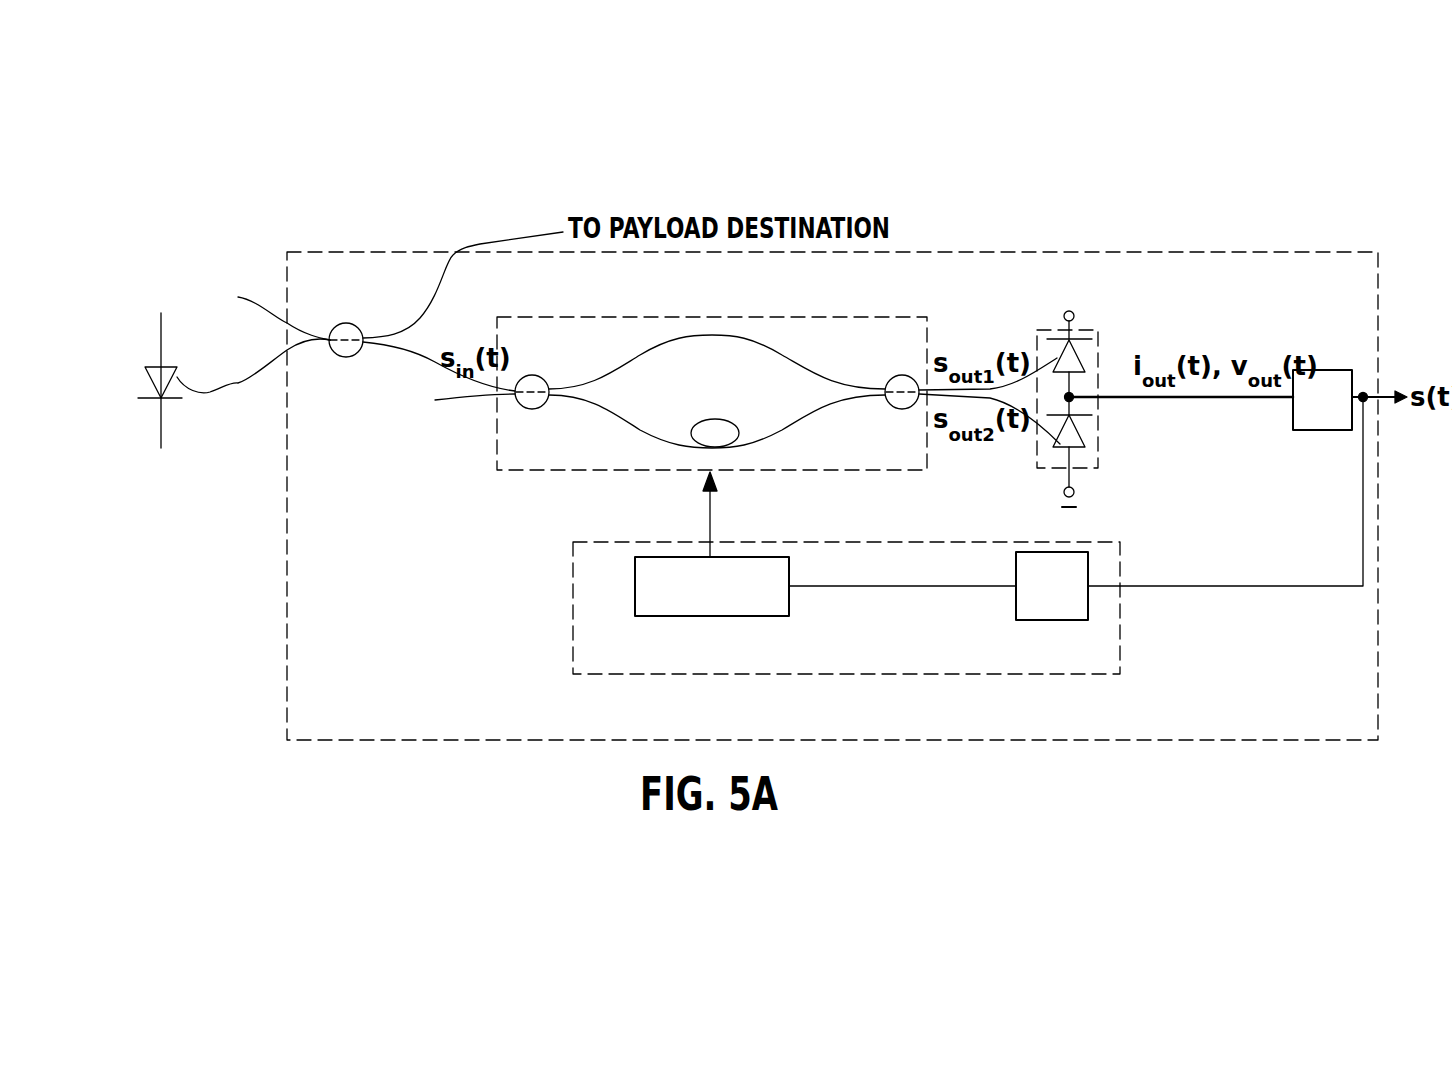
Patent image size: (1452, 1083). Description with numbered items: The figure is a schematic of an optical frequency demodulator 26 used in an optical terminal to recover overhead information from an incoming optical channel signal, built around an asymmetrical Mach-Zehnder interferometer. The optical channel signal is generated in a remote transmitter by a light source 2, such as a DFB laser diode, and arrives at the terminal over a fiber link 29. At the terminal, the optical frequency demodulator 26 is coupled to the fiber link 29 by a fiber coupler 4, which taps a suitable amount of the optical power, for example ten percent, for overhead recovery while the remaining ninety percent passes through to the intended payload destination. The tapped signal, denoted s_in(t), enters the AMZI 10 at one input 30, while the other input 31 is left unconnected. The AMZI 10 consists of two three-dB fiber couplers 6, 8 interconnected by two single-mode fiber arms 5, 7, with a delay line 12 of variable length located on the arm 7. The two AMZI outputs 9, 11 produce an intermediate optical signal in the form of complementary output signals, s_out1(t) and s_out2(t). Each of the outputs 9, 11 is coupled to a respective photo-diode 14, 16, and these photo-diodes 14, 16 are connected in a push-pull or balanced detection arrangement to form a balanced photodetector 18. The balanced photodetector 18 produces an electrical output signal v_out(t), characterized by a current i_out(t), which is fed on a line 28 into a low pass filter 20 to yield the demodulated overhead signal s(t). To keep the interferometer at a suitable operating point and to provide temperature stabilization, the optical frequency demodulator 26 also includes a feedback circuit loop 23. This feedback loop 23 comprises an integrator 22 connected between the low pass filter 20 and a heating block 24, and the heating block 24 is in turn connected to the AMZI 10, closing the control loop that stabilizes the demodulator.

The light source 2 is at (175, 368).
The fiber coupler 4 is at (347, 358).
The single-mode fiber arm 5 is at (633, 368).
The 3 dB fiber coupler 6 is at (543, 378).
The single-mode fiber arm 7 is at (647, 427).
The 3 dB fiber coupler 8 is at (917, 378).
The AMZI output 9 is at (1035, 385).
The asymmetrical Mach-Zehnder interferometer (AMZI) 10 is at (877, 315).
The AMZI output 11 is at (1035, 410).
The delay line 12 is at (703, 418).
The photo-diode 14 is at (1078, 357).
The photo-diode 16 is at (1078, 445).
The balanced photodetector 18 is at (1108, 393).
The low pass filter 20 is at (1325, 432).
The integrator 22 is at (1037, 620).
The feedback circuit loop 23 is at (968, 535).
The heating block 24 is at (648, 616).
The optical frequency demodulator 26 is at (1168, 250).
The line 28 is at (1125, 368).
The fiber link 29 is at (255, 380).
The AMZI input 30 is at (433, 375).
The AMZI input 31 is at (435, 407).